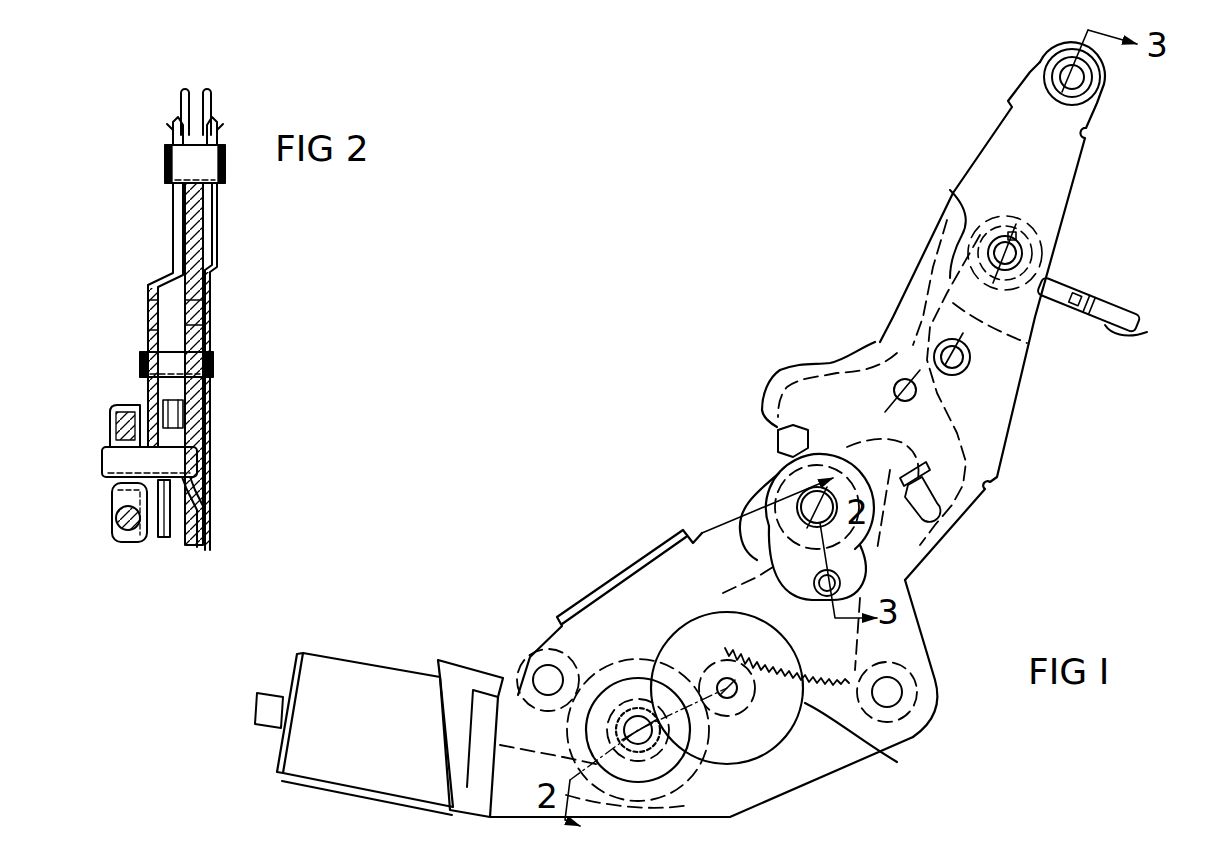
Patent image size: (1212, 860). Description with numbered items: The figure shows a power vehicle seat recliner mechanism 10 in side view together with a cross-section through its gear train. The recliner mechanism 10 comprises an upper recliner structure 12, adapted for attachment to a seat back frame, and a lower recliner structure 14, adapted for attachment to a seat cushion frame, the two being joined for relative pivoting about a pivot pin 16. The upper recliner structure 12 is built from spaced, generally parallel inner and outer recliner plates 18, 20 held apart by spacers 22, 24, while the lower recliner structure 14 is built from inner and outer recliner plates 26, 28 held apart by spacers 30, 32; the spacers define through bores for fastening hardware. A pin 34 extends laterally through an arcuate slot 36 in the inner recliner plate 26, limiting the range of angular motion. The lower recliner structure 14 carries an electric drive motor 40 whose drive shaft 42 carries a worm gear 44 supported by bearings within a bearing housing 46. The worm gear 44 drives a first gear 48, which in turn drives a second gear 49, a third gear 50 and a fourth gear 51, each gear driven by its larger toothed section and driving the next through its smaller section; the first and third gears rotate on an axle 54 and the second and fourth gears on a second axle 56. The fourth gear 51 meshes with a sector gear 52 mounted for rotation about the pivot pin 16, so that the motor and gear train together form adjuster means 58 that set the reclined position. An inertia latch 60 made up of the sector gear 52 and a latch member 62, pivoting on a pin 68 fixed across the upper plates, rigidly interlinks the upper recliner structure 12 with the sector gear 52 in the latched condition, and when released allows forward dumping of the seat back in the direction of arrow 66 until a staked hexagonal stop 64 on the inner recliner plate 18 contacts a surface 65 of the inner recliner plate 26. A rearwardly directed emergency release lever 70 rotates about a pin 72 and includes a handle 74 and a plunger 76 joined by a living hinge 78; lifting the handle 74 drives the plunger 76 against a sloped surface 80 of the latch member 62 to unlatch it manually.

In FIG. 1, the recliner mechanism 10 is at (697, 365).
In FIG. 1, the upper recliner structure 12 is at (912, 268).
In FIG. 1, the lower recliner structure 14 is at (603, 578).
In FIG. 2, the pivot pin 16 is at (203, 165).
In FIG. 1, the pivot pin 16 is at (797, 507).
In FIG. 2, the inner recliner plate 18 is at (211, 102).
In FIG. 1, the inner recliner plate 18 is at (1066, 173).
In FIG. 2, the outer recliner plate 20 is at (183, 100).
In FIG. 1, the spacer 22 is at (1100, 78).
In FIG. 1, the spacer 24 is at (972, 360).
In FIG. 2, the inner recliner plate 26 is at (217, 230).
In FIG. 2, the outer recliner plate 28 is at (173, 222).
In FIG. 1, the spacer 30 is at (540, 667).
In FIG. 1, the spacer 32 is at (902, 692).
In FIG. 1, the pin 34 is at (908, 581).
In FIG. 1, the arcuate slot 36 is at (783, 578).
In FIG. 1, the electric drive motor 40 is at (355, 672).
In FIG. 1, the drive shaft 42 is at (473, 770).
In FIG. 2, the worm gear 44 is at (117, 518).
In FIG. 1, the worm gear 44 is at (737, 817).
In FIG. 2, the bearing housing 46 is at (112, 500).
In FIG. 2, the first gear 48 is at (128, 405).
In FIG. 1, the first gear 48 is at (706, 760).
In FIG. 2, the second gear 49 is at (148, 308).
In FIG. 1, the second gear 49 is at (862, 741).
In FIG. 2, the third gear 50 is at (168, 517).
In FIG. 1, the third gear 50 is at (680, 772).
In FIG. 2, the fourth gear 51 is at (183, 412).
In FIG. 1, the fourth gear 51 is at (690, 627).
In FIG. 2, the sector gear 52 is at (203, 307).
In FIG. 1, the sector gear 52 is at (865, 641).
In FIG. 2, the axle 54 is at (105, 458).
In FIG. 1, the axle 54 is at (628, 720).
In FIG. 2, the second axle 56 is at (200, 364).
In FIG. 1, the second axle 56 is at (737, 697).
In FIG. 1, the adjuster means 58 is at (420, 815).
In FIG. 1, the inertia latch 60 is at (985, 495).
In FIG. 1, the latch member 62 is at (827, 373).
In FIG. 1, the staked hexagonal stop 64 is at (783, 430).
In FIG. 1, the surface 65 is at (778, 475).
In FIG. 1, the arrow 66 is at (880, 73).
In FIG. 1, the pin 68 is at (897, 380).
In FIG. 1, the emergency release lever 70 is at (1118, 292).
In FIG. 1, the pin 72 is at (1022, 254).
In FIG. 1, the handle 74 is at (1110, 328).
In FIG. 1, the plunger 76 is at (1025, 349).
In FIG. 1, the living hinge 78 is at (948, 188).
In FIG. 1, the sloped surface 80 is at (892, 308).